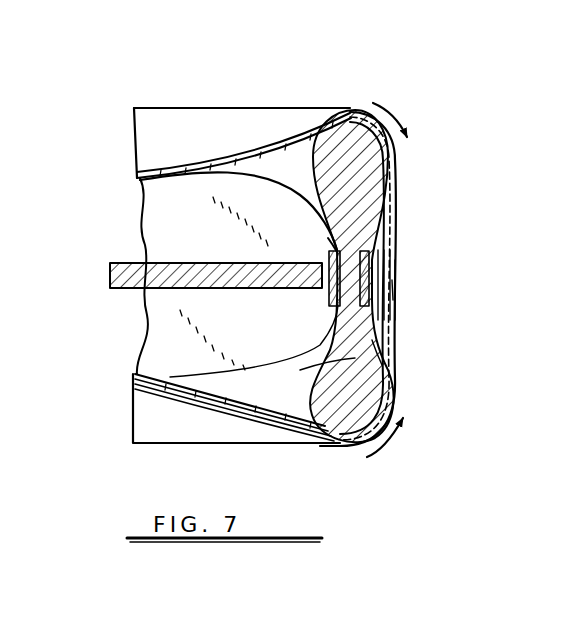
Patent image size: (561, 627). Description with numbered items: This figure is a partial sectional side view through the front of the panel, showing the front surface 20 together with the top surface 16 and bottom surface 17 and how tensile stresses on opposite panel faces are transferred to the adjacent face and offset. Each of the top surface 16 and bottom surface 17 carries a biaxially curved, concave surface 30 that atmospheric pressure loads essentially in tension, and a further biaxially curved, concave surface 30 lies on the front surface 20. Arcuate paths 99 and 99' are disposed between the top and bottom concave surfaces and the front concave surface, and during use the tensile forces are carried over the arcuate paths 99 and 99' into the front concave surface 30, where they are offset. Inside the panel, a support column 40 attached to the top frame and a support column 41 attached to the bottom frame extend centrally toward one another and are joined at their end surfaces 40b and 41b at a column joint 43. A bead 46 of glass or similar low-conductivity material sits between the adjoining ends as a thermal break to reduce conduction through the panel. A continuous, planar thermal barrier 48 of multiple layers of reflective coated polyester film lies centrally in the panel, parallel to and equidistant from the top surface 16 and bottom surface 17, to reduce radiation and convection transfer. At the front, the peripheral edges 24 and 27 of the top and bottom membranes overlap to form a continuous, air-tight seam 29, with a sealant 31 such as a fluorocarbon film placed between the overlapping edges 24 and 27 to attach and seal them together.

The top surface 16 is at (152, 100).
The bottom surface 17 is at (167, 455).
The biaxially curved, concave surface 30 is at (147, 138).
The support column 40 is at (352, 197).
The end surface of support column 40b is at (330, 250).
The column joint 43 is at (330, 240).
The thermal barrier 48 is at (110, 272).
The end surface of support column 41b is at (340, 316).
The peripheral edge of top membrane 24 is at (355, 358).
The peripheral edge of bottom membrane 27 is at (383, 255).
The bead 46 is at (387, 260).
The front surface 20 is at (414, 287).
The air-tight seam 29 is at (401, 304).
The sealant 31 is at (394, 296).
The support column 41 is at (365, 352).
The arcuate path 99 is at (398, 109).
The arcuate path 99' is at (405, 430).